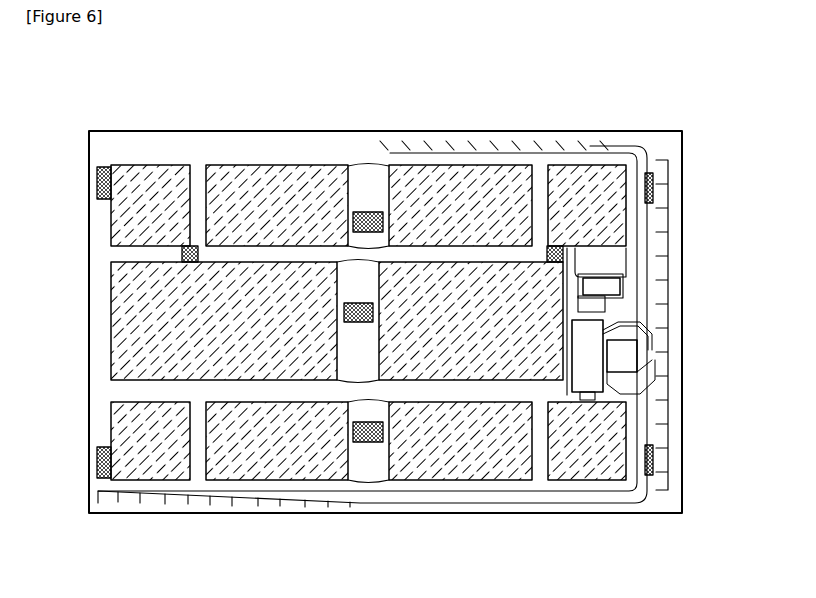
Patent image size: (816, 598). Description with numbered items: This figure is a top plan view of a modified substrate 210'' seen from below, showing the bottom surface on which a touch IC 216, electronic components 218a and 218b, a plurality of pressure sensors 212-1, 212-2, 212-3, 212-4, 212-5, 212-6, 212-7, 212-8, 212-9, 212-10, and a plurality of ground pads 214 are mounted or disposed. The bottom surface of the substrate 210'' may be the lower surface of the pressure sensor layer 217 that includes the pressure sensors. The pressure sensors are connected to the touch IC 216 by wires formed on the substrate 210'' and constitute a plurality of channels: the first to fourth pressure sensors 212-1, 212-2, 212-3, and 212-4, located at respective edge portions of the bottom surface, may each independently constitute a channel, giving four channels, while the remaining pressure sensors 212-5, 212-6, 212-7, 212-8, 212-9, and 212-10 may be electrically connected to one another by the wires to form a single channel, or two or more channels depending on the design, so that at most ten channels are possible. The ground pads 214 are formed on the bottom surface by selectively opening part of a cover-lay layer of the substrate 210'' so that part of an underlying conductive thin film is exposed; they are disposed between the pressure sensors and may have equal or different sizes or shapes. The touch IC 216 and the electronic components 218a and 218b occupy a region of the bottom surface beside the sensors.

The substrate 210'' is at (407, 282).
The first pressure sensor 212-1 is at (150, 172).
The second pressure sensor 212-2 is at (582, 172).
The third pressure sensor 212-3 is at (584, 458).
The fourth pressure sensor 212-4 is at (152, 458).
The pressure sensor 212-5 is at (285, 172).
The pressure sensor 212-6 is at (462, 172).
The pressure sensor 212-7 is at (126, 321).
The pressure sensor 212-8 is at (545, 308).
The pressure sensor 212-9 is at (273, 458).
The pressure sensor 212-10 is at (457, 458).
The ground pad 214 is at (370, 444).
The touch IC 216 is at (627, 363).
The pressure sensor layer 217 is at (673, 240).
The electronic component 218a is at (613, 286).
The electronic component 218b is at (602, 331).